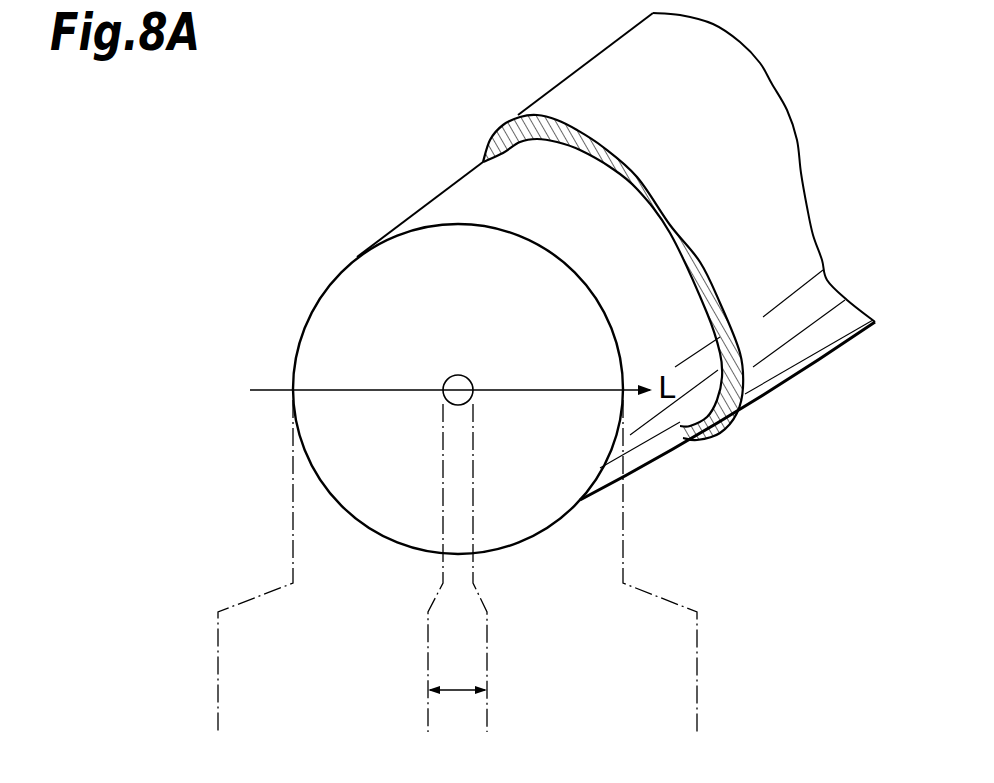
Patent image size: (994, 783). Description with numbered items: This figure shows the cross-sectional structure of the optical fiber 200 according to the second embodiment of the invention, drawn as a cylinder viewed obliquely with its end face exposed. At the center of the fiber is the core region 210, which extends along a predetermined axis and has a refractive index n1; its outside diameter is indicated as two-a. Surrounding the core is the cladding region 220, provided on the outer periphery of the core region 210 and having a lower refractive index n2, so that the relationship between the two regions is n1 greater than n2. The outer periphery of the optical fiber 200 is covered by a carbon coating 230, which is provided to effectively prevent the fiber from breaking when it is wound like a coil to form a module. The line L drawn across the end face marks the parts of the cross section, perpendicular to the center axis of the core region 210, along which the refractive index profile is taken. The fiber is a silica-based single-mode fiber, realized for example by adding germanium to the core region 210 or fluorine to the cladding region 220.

The optical fiber 200 is at (481, 188).
The core region 210 is at (456, 387).
The cladding region 220 is at (353, 278).
The carbon coating 230 is at (762, 78).